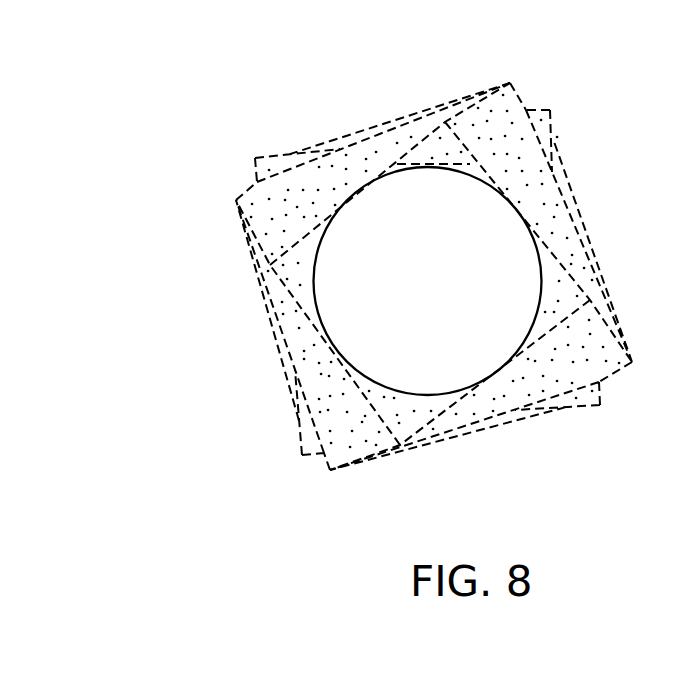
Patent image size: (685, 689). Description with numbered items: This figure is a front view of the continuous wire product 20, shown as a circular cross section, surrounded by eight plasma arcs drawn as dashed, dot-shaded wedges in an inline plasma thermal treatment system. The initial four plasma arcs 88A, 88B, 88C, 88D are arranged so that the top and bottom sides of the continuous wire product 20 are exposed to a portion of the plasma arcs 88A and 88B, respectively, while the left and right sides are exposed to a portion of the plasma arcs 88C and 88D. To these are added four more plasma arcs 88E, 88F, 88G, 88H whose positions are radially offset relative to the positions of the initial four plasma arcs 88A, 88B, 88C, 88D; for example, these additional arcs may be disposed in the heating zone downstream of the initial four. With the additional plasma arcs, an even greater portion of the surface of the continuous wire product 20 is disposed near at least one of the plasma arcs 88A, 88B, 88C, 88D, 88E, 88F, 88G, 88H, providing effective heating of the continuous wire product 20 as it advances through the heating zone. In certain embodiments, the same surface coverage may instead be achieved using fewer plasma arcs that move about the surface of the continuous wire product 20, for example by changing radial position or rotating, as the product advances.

The continuous wire product 20 is at (442, 296).
The plasma arc 88A is at (537, 110).
The plasma arc 88B is at (320, 453).
The plasma arc 88C is at (254, 171).
The plasma arc 88D is at (599, 398).
The plasma arc 88E is at (377, 153).
The plasma arc 88F is at (473, 410).
The plasma arc 88G is at (296, 333).
The plasma arc 88H is at (571, 213).